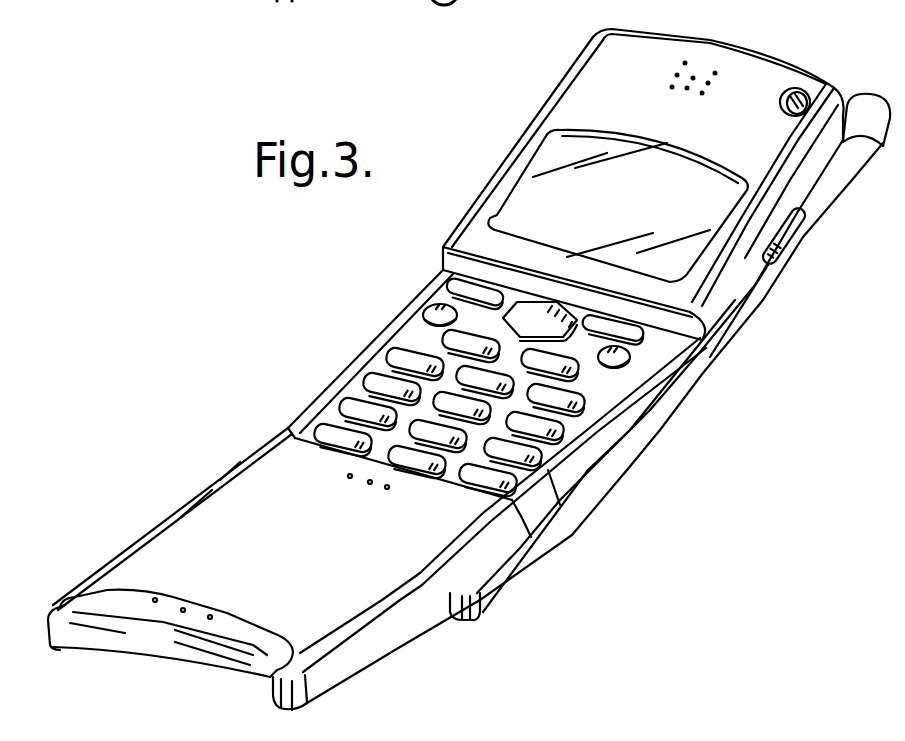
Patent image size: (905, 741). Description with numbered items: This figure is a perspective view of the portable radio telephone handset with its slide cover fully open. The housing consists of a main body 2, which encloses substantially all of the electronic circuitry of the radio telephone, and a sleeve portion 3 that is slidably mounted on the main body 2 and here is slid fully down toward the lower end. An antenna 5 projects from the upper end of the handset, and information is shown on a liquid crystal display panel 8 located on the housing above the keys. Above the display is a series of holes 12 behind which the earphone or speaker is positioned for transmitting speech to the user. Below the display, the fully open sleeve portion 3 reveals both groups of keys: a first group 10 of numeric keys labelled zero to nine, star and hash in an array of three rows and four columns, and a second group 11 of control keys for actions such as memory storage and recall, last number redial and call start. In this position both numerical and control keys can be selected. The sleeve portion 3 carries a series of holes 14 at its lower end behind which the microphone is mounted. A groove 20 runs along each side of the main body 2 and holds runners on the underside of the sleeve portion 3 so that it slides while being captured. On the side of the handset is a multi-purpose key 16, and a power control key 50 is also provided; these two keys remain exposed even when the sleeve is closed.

The main body 2 is at (597, 492).
The sleeve portion 3 is at (387, 637).
The antenna 5 is at (867, 137).
The liquid crystal display (LCD) panel 8 is at (507, 187).
The first group of keys 10 is at (385, 378).
The second group of control keys 11 is at (465, 372).
The series of holes 12 is at (700, 67).
The series of holes 14 is at (180, 608).
The multi-purpose key 16 is at (790, 232).
The groove 20 is at (563, 505).
The power control key 50 is at (795, 92).